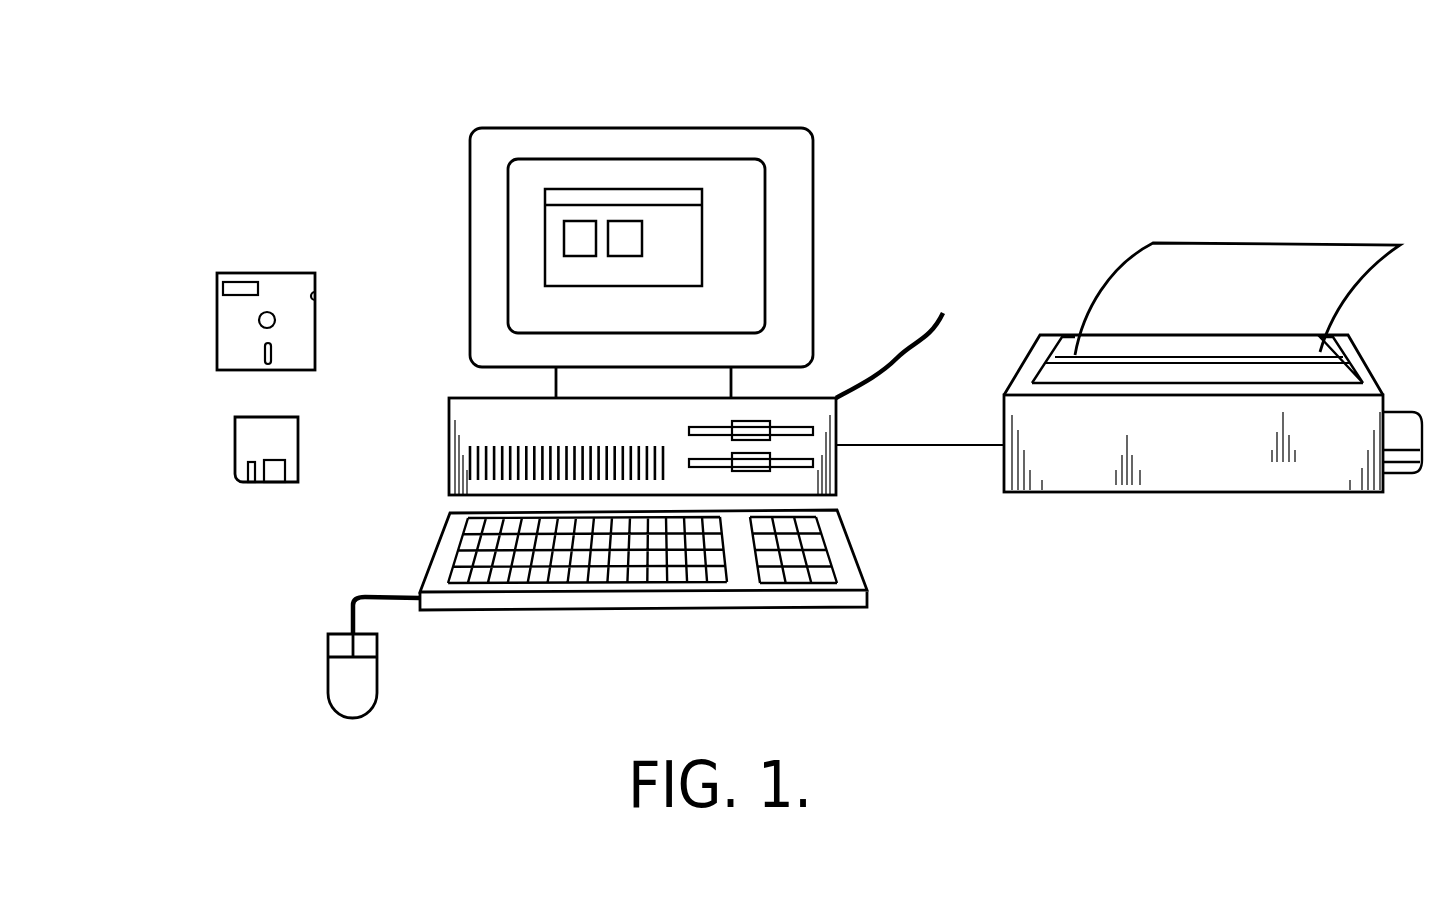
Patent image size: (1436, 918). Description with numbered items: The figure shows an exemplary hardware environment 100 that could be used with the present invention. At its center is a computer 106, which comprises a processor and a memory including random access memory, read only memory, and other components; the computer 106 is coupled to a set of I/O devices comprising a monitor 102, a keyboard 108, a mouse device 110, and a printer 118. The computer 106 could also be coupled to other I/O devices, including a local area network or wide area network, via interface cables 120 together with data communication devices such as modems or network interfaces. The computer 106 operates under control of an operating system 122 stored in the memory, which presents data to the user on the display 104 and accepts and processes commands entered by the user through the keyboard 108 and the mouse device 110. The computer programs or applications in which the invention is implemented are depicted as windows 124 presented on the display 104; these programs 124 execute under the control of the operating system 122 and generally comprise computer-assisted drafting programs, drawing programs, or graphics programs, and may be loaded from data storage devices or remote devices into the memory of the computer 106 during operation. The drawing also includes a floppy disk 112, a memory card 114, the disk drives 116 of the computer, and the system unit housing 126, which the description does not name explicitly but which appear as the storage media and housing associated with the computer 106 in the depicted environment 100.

The hardware environment 100 is at (836, 101).
The monitor 102 is at (470, 265).
The display 104 is at (508, 207).
The computer 106 is at (462, 447).
The keyboard 108 is at (805, 607).
The mouse device 110 is at (335, 715).
The floppy disk 112 is at (217, 336).
The memory card 114 is at (245, 445).
The disk drives 116 is at (817, 462).
The printer 118 is at (1197, 468).
The interface cables 120 is at (892, 358).
The operating system 122 is at (518, 177).
The windows 124 is at (563, 188).
The system unit 126 is at (495, 417).